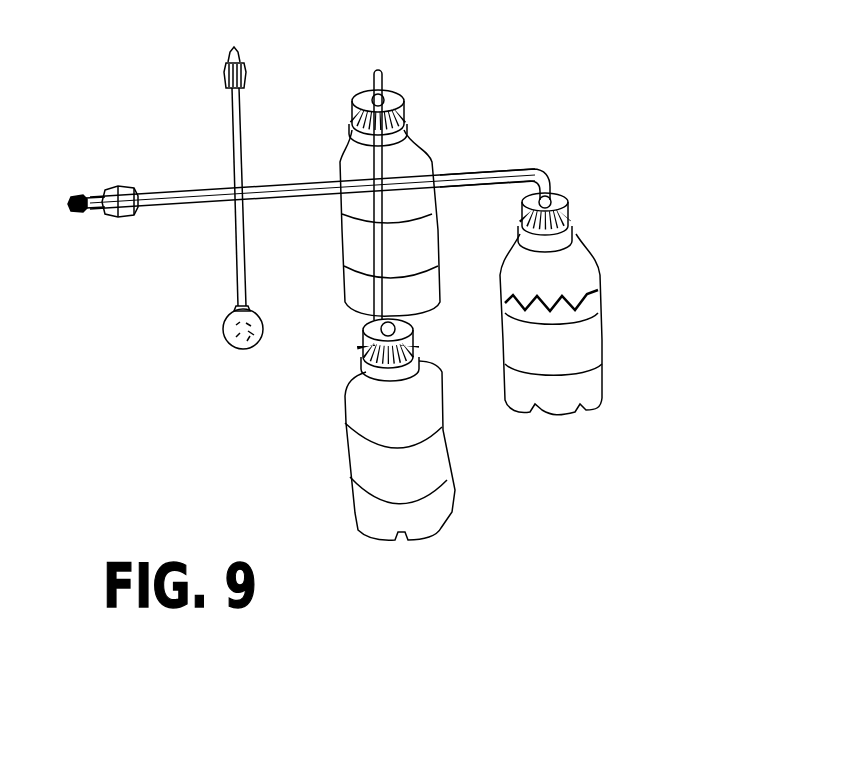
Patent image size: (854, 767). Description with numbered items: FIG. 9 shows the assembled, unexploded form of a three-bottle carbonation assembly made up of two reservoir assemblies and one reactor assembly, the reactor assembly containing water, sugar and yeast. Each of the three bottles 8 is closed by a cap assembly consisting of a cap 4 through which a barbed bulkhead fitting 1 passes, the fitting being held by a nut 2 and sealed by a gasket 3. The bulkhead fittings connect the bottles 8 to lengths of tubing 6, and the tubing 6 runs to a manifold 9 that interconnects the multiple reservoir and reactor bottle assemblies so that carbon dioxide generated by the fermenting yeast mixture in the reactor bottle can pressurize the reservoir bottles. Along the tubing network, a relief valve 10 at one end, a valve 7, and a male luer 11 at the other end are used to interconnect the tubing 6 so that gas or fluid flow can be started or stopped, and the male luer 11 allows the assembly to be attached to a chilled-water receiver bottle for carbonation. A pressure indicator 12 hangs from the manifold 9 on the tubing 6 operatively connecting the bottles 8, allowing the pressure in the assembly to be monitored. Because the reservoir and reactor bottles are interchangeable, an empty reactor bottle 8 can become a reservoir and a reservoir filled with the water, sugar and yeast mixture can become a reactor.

The barbed bulkhead fitting 1 is at (535, 203).
The nut 2 is at (555, 197).
The gasket 3 is at (522, 218).
The cap 4 is at (565, 208).
The tubing 6 is at (475, 172).
The valve 7 is at (118, 180).
The bottle 8 is at (607, 275).
The manifold 9 is at (275, 183).
The relief valve 10 is at (250, 72).
The male luer 11 is at (74, 188).
The pressure indicator 12 is at (217, 328).